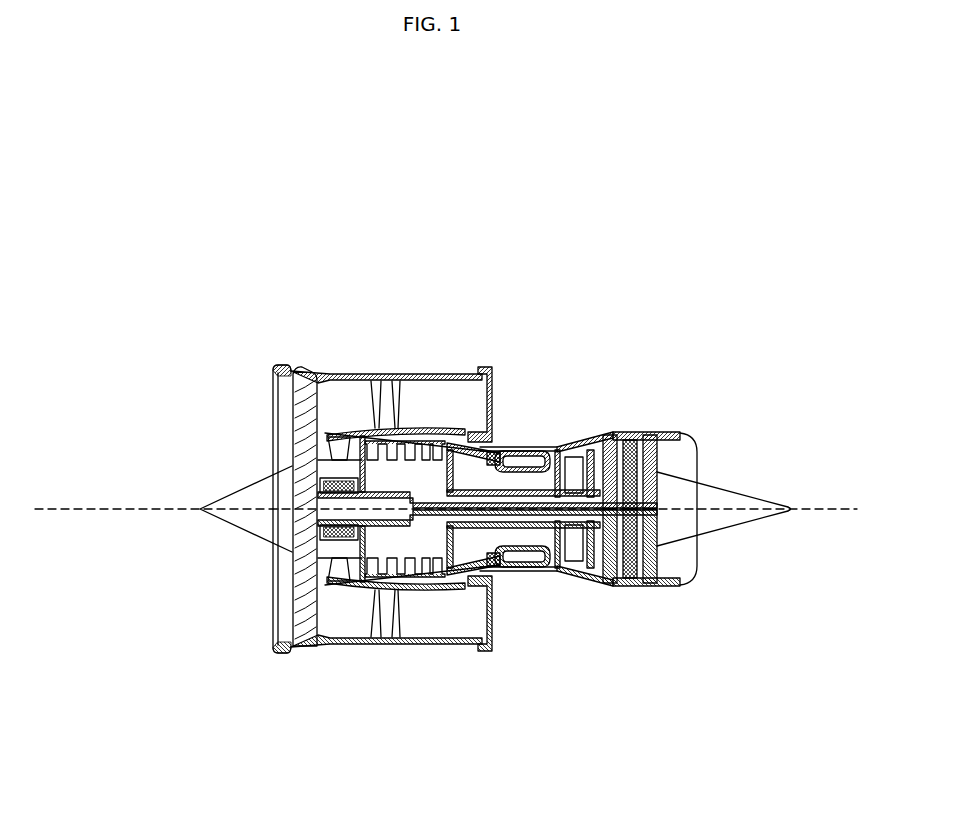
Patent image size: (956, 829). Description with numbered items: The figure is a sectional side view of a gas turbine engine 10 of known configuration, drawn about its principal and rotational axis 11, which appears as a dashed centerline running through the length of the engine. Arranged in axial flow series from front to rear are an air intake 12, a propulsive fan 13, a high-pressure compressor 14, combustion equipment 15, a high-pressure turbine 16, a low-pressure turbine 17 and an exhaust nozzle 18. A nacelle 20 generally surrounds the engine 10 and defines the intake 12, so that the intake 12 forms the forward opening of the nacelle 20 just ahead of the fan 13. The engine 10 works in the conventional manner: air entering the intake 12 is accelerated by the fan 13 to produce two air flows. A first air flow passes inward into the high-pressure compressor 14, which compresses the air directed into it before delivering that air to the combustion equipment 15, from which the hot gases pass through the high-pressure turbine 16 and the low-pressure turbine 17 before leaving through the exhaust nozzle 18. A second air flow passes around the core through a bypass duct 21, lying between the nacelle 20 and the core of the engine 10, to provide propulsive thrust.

The gas turbine engine 10 is at (556, 396).
The principal and rotational axis 11 is at (197, 508).
The air intake 12 is at (272, 413).
The propulsive fan 13 is at (310, 400).
The high-pressure compressor 14 is at (435, 475).
The combustion equipment 15 is at (513, 462).
The high-pressure turbine 16 is at (600, 443).
The low-pressure turbine 17 is at (657, 468).
The exhaust nozzle 18 is at (683, 465).
The nacelle 20 is at (340, 648).
The bypass duct 21 is at (435, 627).